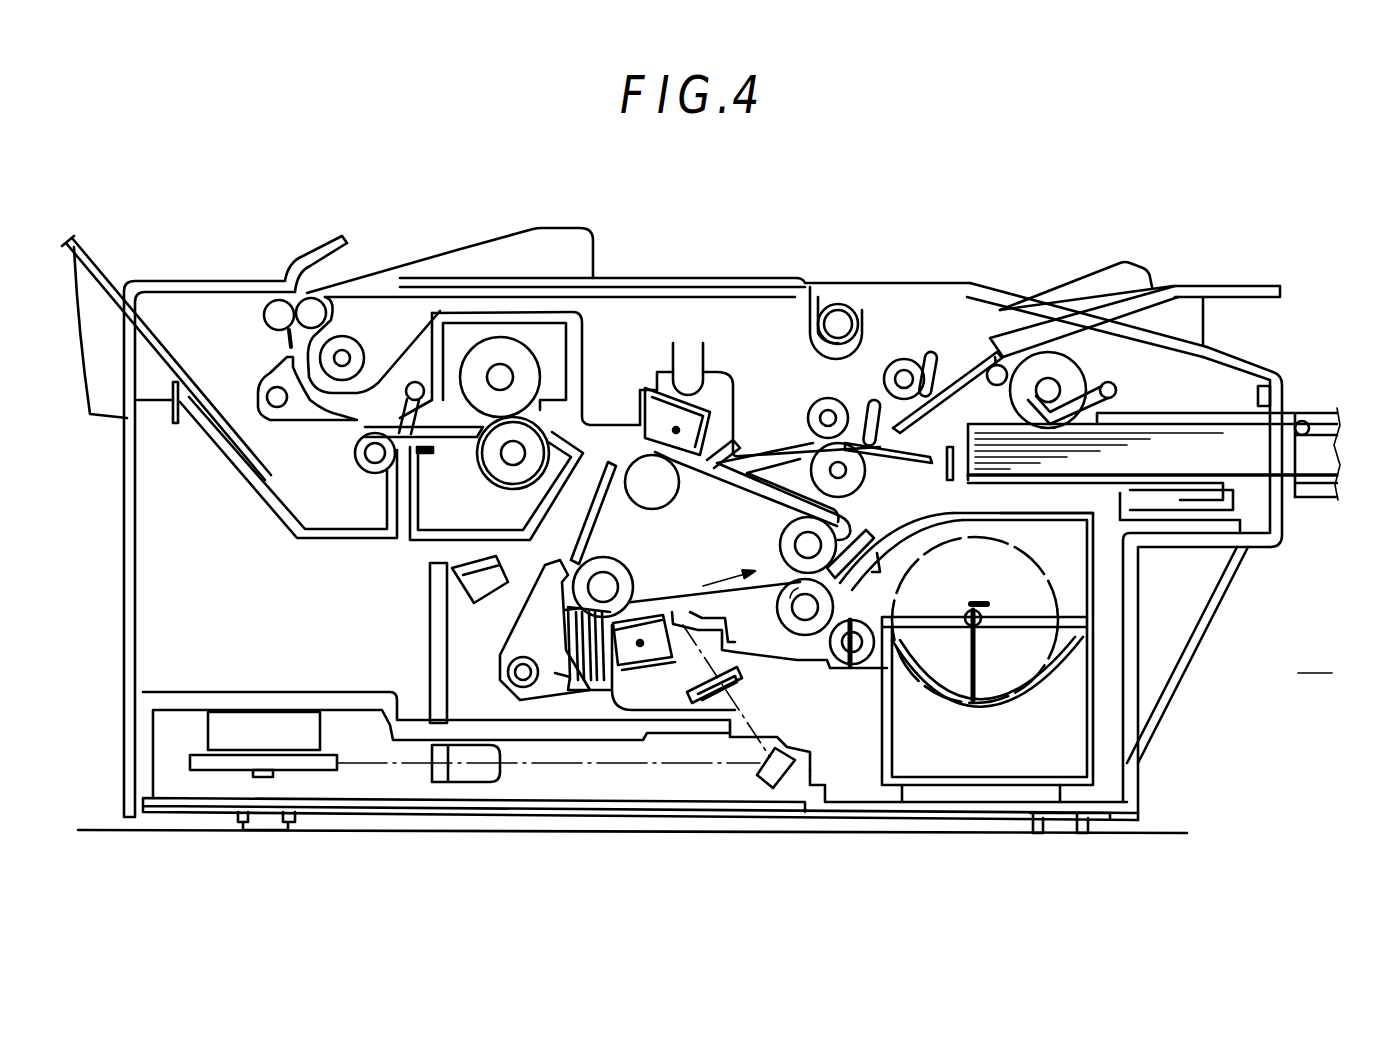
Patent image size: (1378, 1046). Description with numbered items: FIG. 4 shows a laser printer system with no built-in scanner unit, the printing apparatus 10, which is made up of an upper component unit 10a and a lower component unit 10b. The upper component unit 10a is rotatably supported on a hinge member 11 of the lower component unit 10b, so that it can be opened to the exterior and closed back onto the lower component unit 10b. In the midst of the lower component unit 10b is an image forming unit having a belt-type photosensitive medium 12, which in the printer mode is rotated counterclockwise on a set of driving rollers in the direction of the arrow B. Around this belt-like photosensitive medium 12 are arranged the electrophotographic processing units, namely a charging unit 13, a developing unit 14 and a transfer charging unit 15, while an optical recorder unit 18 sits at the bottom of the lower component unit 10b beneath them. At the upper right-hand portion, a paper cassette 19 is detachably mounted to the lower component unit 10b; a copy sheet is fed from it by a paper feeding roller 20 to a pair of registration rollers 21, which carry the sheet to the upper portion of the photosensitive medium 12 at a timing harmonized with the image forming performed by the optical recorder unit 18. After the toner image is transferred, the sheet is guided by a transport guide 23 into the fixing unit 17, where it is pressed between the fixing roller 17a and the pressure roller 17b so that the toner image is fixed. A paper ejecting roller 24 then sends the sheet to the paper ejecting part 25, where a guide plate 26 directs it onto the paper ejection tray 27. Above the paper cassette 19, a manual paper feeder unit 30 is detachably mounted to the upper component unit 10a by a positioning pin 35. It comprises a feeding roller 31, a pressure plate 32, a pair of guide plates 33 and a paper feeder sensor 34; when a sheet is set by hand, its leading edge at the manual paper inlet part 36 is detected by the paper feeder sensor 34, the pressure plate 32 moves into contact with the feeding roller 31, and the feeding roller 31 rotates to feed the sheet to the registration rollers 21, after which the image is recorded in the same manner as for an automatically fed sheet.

The printing apparatus 10 is at (705, 534).
The upper component unit 10a is at (680, 278).
The lower component unit 10b is at (1140, 616).
The hinge member 11 is at (342, 357).
The belt-type photosensitive medium 12 is at (645, 622).
The charging unit 13 is at (628, 650).
The developing unit 14 is at (1023, 667).
The transfer charging unit 15 is at (693, 418).
The fixing unit 17 is at (529, 315).
The fixing roller 17a is at (483, 473).
The pressure roller 17b is at (530, 370).
The optical recorder unit 18 is at (378, 787).
The paper cassette 19 is at (1312, 480).
The paper feeding roller 20 is at (1073, 375).
The registration rollers 21 is at (817, 467).
The transport guide 23 is at (608, 426).
The paper ejecting roller 24 is at (357, 470).
The paper ejecting part 25 is at (290, 447).
The guide plate 26 is at (218, 420).
The paper ejection tray 27 is at (97, 262).
The manual paper feeder unit 30 is at (1169, 250).
The feeding roller 31 is at (903, 359).
The pressure plate 32 is at (968, 285).
The guide plates 33 is at (1112, 282).
The paper feeder sensor 34 is at (933, 355).
The positioning pin 35 is at (838, 318).
The manual paper inlet part 36 is at (998, 326).